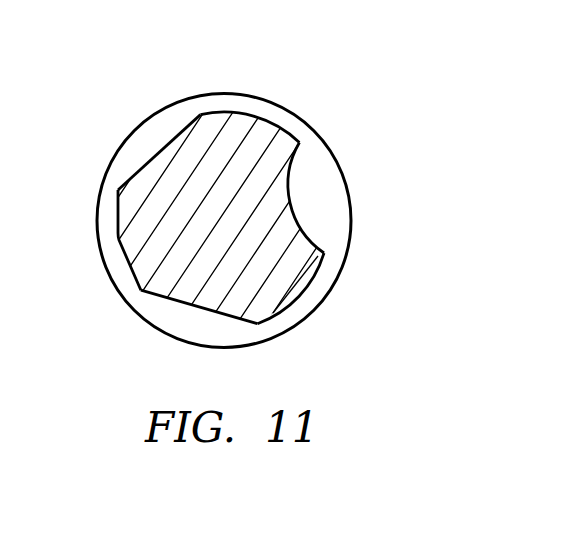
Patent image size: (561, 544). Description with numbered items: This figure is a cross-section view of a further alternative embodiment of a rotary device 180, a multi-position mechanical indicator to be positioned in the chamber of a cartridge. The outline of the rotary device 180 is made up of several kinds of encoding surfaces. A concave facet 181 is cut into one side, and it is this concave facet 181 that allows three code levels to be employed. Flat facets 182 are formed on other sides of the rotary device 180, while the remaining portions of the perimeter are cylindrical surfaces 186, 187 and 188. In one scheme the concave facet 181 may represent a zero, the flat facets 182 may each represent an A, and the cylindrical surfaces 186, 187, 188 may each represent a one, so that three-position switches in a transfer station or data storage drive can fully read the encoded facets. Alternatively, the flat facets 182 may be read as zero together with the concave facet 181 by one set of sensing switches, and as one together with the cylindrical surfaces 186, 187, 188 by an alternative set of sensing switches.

The rotary device 180 is at (328, 102).
The concave facet 181 is at (290, 190).
The flat facets 182 is at (160, 150).
The cylindrical surface 186 is at (252, 115).
The cylindrical surface 187 is at (120, 255).
The cylindrical surface 188 is at (305, 294).